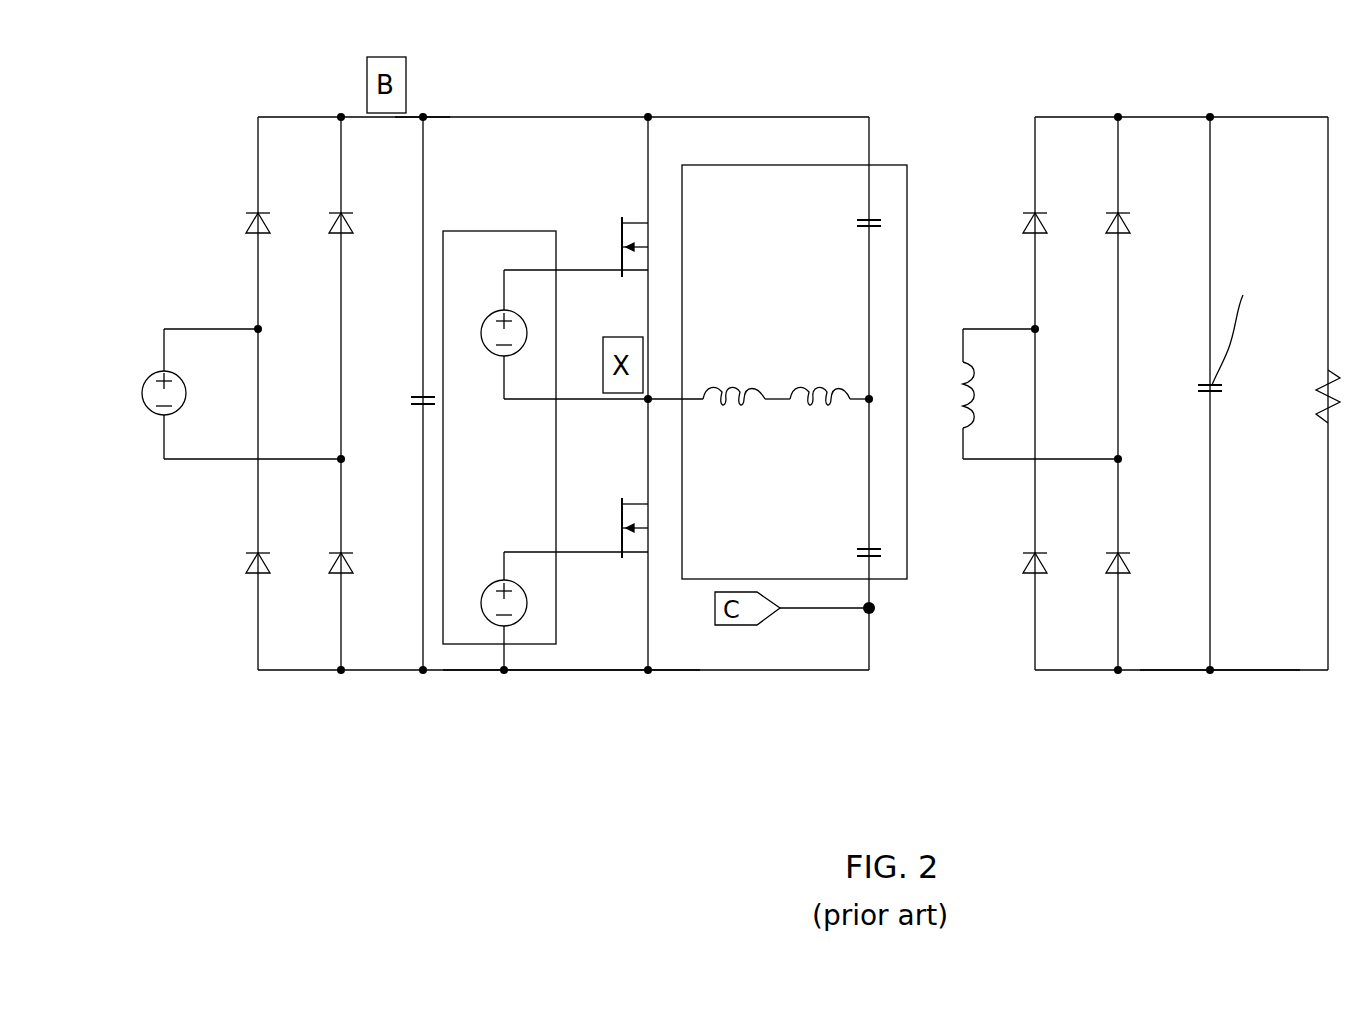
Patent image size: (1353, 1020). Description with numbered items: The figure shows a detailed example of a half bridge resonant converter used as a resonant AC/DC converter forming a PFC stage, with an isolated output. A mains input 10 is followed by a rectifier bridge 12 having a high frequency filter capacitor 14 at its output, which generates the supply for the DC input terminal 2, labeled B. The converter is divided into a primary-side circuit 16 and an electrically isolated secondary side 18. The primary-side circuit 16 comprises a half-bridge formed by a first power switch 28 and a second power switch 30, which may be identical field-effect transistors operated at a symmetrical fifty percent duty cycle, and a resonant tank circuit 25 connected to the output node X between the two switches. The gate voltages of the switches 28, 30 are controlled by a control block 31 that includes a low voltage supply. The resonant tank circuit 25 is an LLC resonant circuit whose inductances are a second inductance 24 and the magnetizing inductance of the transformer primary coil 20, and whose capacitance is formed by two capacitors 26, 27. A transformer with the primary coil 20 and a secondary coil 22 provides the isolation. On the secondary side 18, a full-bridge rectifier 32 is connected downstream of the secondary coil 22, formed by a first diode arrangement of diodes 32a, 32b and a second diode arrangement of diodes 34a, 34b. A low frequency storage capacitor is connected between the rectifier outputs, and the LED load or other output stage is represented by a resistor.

The DC input terminal 2 is at (423, 117).
The mains input 10 is at (148, 380).
The rectifier bridge 12 is at (340, 105).
The high frequency filter capacitor 14 is at (418, 396).
The primary-side circuit 16 is at (563, 692).
The secondary side 18 is at (1189, 697).
The primary coil 20 is at (796, 397).
The secondary coil 22 is at (973, 312).
The second inductance 24 is at (744, 397).
The resonant tank circuit 25 is at (760, 165).
The capacitor 26 is at (856, 226).
The capacitor 27 is at (860, 545).
The first power switch 28 is at (620, 231).
The second power switch 30 is at (620, 512).
The control block 31 is at (478, 231).
The rectifier 32 is at (1127, 346).
The diode 32a is at (1022, 222).
The diode 32b is at (1025, 558).
The diode 34a is at (1125, 222).
The diode 34b is at (1130, 573).